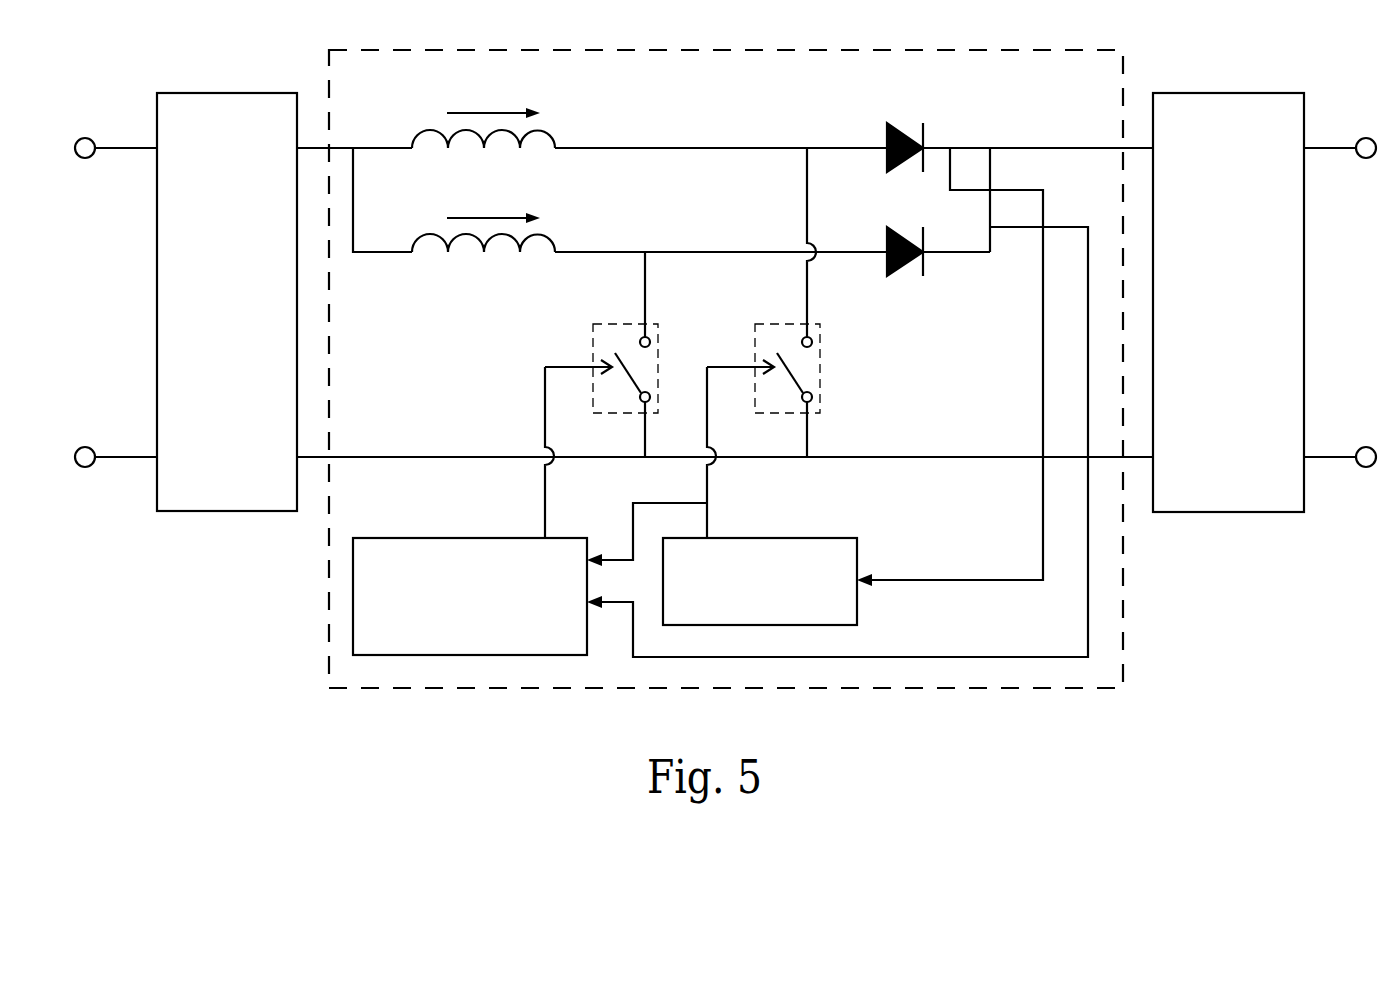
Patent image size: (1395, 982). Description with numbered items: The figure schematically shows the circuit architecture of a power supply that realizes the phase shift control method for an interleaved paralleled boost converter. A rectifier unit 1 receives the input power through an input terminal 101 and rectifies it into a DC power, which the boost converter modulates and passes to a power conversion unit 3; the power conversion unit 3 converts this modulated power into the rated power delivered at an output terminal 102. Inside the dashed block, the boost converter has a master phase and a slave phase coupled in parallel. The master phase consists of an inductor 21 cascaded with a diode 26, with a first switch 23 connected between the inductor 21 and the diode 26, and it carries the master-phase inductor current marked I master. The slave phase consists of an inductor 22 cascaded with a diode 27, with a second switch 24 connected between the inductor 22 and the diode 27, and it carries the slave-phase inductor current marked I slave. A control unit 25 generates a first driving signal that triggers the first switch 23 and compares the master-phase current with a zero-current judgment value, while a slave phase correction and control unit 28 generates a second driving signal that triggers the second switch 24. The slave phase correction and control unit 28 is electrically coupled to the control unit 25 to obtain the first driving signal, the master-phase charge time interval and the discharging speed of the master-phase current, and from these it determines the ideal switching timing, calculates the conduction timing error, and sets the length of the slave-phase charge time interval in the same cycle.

The rectifier unit 1 is at (257, 497).
The power conversion unit 3 is at (1263, 497).
The inductor 21 is at (412, 134).
The inductor 22 is at (412, 238).
The first switch 23 is at (762, 350).
The second switch 24 is at (600, 350).
The control unit 25 is at (843, 608).
The diode 26 is at (887, 140).
The diode 27 is at (887, 262).
The slave phase correction and control unit 28 is at (527, 550).
The input terminal 101 is at (83, 158).
The output terminal 102 is at (1368, 158).